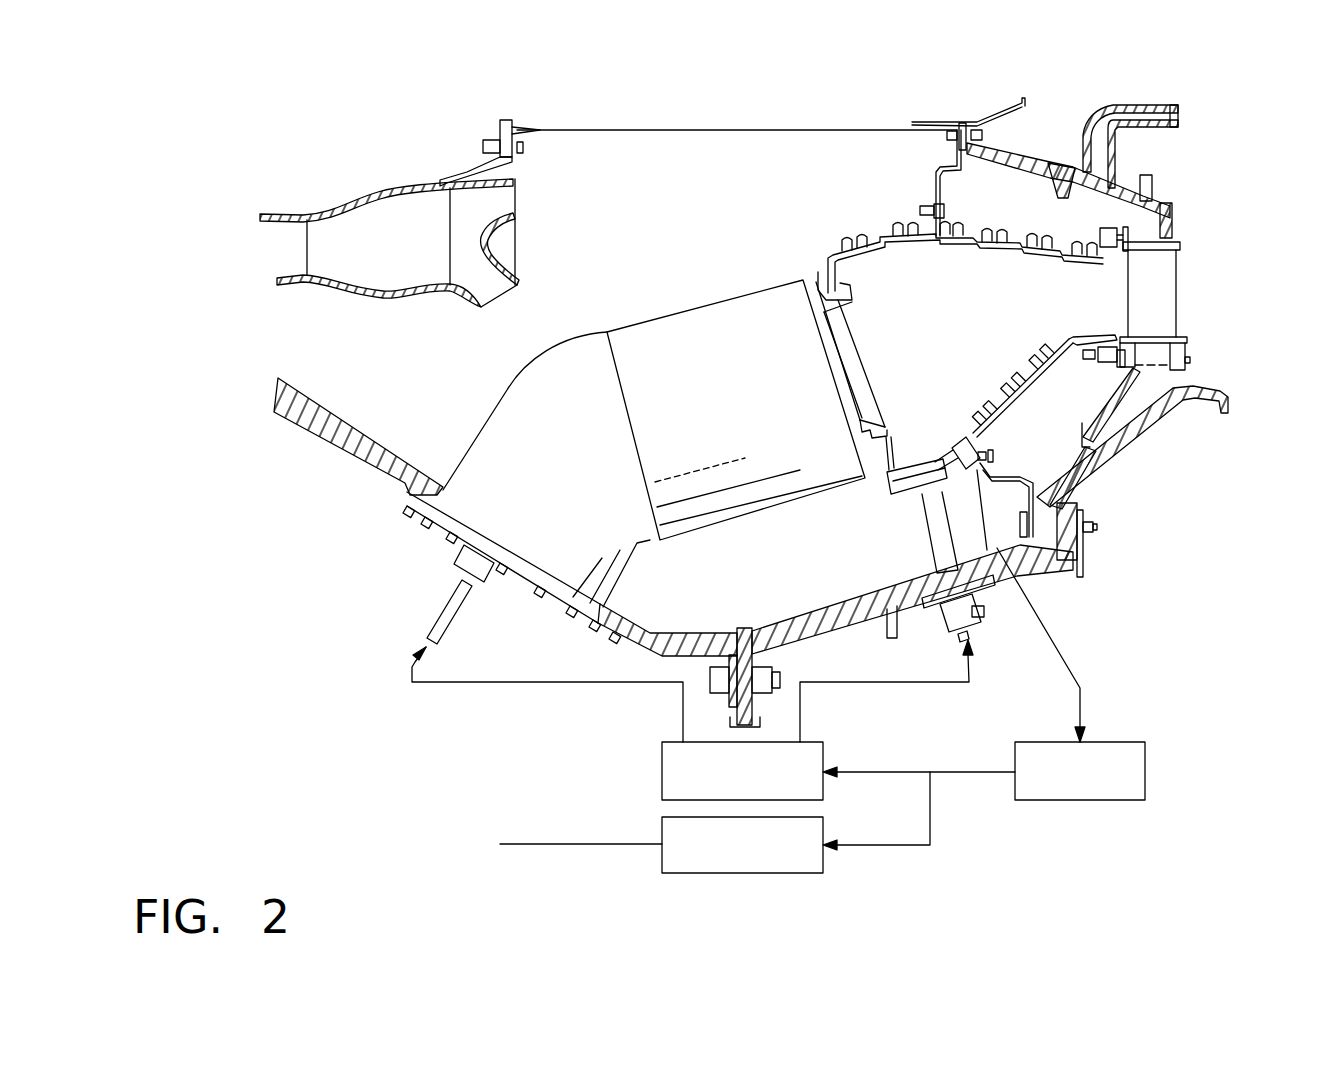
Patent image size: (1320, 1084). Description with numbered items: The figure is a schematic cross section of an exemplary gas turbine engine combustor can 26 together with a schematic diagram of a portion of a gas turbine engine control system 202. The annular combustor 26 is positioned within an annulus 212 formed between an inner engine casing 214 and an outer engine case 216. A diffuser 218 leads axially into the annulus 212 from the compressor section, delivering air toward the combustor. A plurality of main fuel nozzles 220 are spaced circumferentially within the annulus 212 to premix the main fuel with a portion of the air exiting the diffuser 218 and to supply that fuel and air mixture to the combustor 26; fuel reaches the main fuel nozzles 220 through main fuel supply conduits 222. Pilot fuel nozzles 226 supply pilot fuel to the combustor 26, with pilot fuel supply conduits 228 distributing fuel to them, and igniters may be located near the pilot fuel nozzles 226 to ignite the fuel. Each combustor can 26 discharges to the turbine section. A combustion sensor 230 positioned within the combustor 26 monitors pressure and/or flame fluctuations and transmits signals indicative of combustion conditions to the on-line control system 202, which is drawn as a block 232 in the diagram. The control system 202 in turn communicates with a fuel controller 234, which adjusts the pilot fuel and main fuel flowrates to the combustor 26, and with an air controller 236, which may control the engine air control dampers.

The gas turbine engine control system 202 is at (1170, 647).
The annulus 212 is at (745, 220).
The inner engine casing 214 is at (673, 127).
The outer engine case 216 is at (832, 606).
The diffuser 218 is at (446, 369).
The main fuel nozzles 220 is at (720, 303).
The main fuel supply conduits 222 is at (447, 604).
The pilot fuel nozzles 226 is at (905, 493).
The pilot fuel supply conduits 228 is at (973, 638).
The combustion sensor 230 is at (957, 447).
The controller 232 is at (1120, 742).
The fuel controller 234 is at (670, 742).
The air controller 236 is at (693, 875).
The combustor can 26 is at (980, 319).